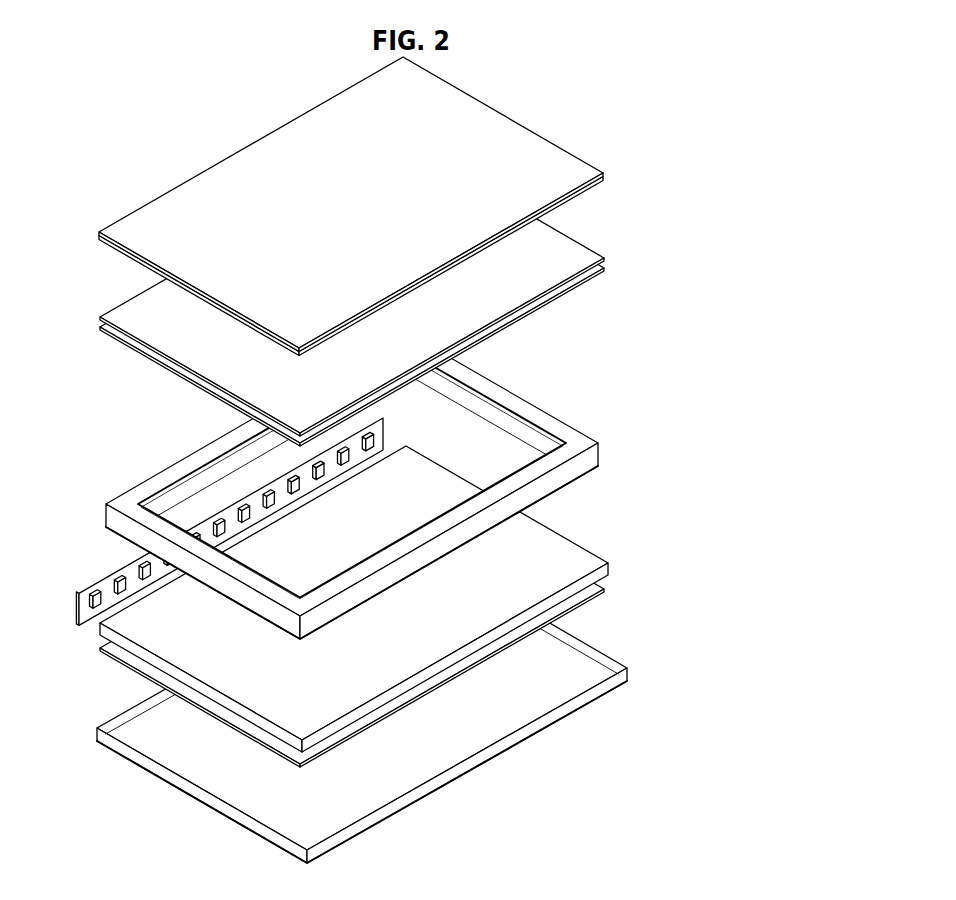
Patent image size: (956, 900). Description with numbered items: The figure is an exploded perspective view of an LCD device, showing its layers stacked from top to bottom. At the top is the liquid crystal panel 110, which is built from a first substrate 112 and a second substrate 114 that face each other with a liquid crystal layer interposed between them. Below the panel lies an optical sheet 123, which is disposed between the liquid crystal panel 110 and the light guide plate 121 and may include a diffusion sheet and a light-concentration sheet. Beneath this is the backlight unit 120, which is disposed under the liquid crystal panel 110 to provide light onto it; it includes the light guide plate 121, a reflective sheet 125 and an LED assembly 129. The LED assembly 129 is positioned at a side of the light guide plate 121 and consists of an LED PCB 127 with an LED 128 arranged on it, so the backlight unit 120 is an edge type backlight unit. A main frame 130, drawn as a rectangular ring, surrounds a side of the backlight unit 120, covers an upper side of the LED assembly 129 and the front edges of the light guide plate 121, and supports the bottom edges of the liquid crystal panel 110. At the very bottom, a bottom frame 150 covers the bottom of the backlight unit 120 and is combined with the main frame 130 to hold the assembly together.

The liquid crystal panel 110 is at (466, 206).
The first substrate 112 is at (633, 172).
The second substrate 114 is at (631, 137).
The backlight unit 120 is at (452, 553).
The light guide plate 121 is at (609, 561).
The optical sheet 123 is at (611, 245).
The reflective sheet 125 is at (603, 591).
The LED PCB 127 is at (371, 435).
The LED 128 is at (381, 440).
The LED assembly 129 is at (433, 482).
The main frame 130 is at (125, 508).
The bottom frame 150 is at (477, 760).